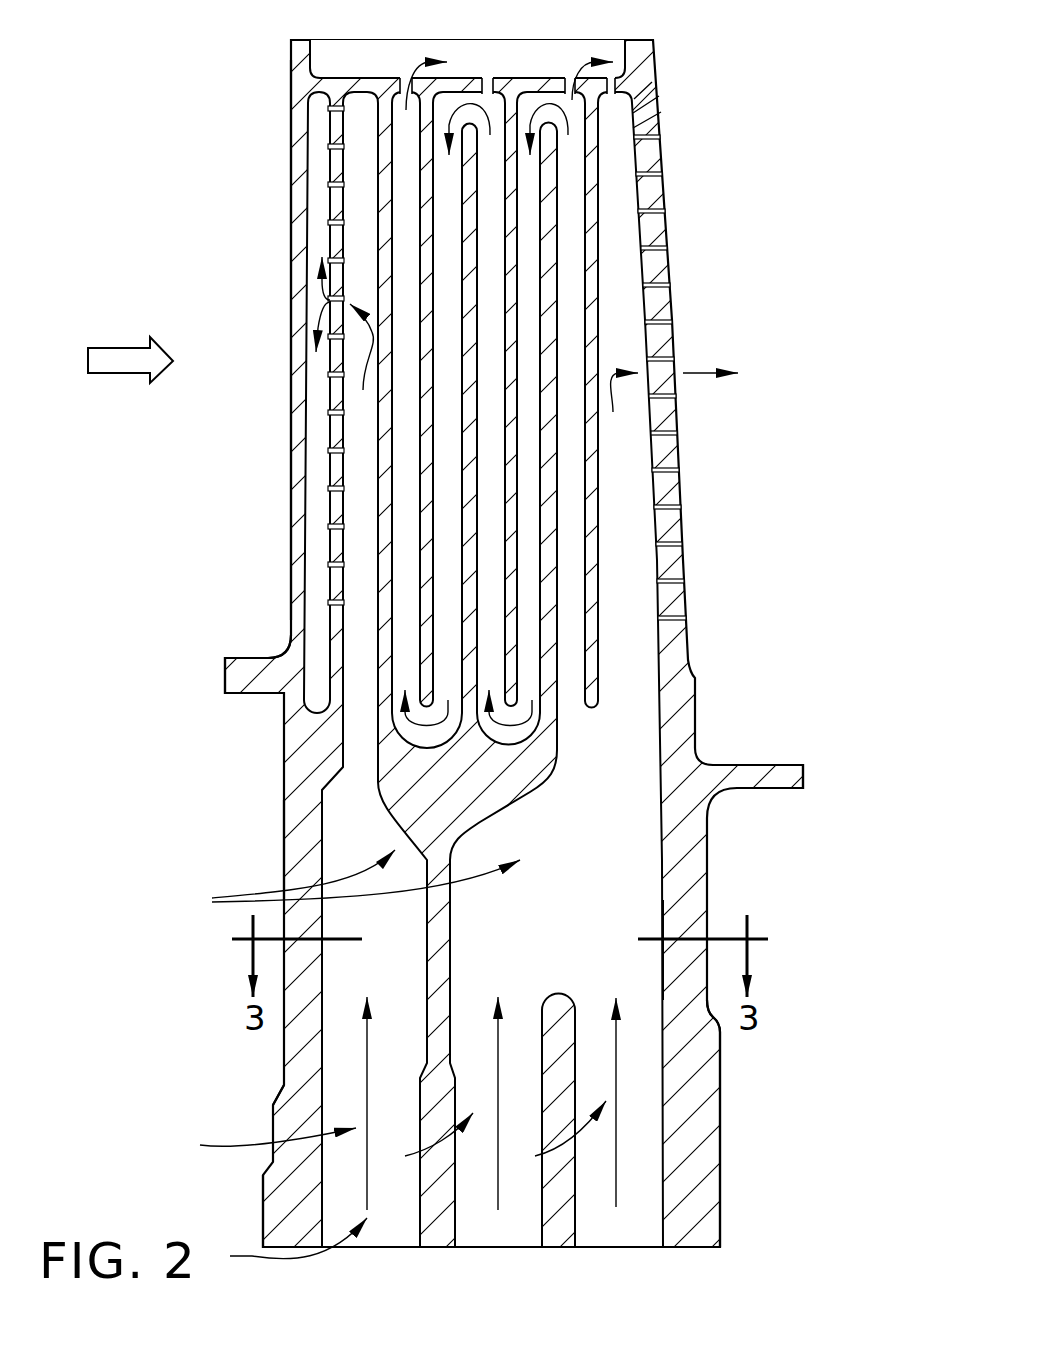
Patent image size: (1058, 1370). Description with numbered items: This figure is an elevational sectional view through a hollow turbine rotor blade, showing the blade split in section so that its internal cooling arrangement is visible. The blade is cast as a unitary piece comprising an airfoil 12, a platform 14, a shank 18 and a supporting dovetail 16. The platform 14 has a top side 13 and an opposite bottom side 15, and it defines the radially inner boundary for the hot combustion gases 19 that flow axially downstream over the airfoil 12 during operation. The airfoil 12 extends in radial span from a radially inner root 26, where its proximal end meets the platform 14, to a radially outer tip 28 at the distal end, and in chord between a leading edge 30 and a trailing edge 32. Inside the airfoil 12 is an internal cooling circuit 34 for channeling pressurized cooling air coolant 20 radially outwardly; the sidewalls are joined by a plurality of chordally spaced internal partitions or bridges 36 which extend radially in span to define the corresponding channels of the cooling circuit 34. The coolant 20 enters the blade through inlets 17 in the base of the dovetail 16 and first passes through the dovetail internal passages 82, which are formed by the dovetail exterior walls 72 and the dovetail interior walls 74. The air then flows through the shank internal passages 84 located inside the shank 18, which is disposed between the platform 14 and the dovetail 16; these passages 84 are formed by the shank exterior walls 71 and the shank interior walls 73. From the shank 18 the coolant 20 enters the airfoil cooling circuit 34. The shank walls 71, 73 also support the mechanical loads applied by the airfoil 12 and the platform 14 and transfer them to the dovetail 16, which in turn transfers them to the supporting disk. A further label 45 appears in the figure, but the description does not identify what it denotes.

The airfoil 12 is at (289, 105).
The tip 28 is at (392, 40).
The internal partitions or bridges 36 is at (374, 231).
The hot combustion gases 19 is at (135, 348).
The leading edge 30 is at (291, 436).
The trailing edge 32 is at (682, 437).
The root 26 is at (270, 657).
The top side of the platform 13 is at (248, 658).
The platform 14 is at (225, 680).
The bottom side of the platform 15 is at (256, 695).
The shank 18 is at (285, 853).
The shank internal passages 84 is at (350, 884).
The internal cooling circuit 34 is at (514, 744).
The shank exterior walls 71 is at (303, 985).
The shank interior walls 73 is at (441, 965).
The dovetail interior walls 74 is at (556, 1100).
The dovetail exterior walls 72 is at (279, 1100).
The dovetail 16 is at (721, 1120).
The dovetail internal passages 82 is at (386, 1137).
The cooling air coolant 20 is at (250, 1256).
The coolant passage flow 45 is at (616, 1177).
The inlets 17 is at (385, 1250).